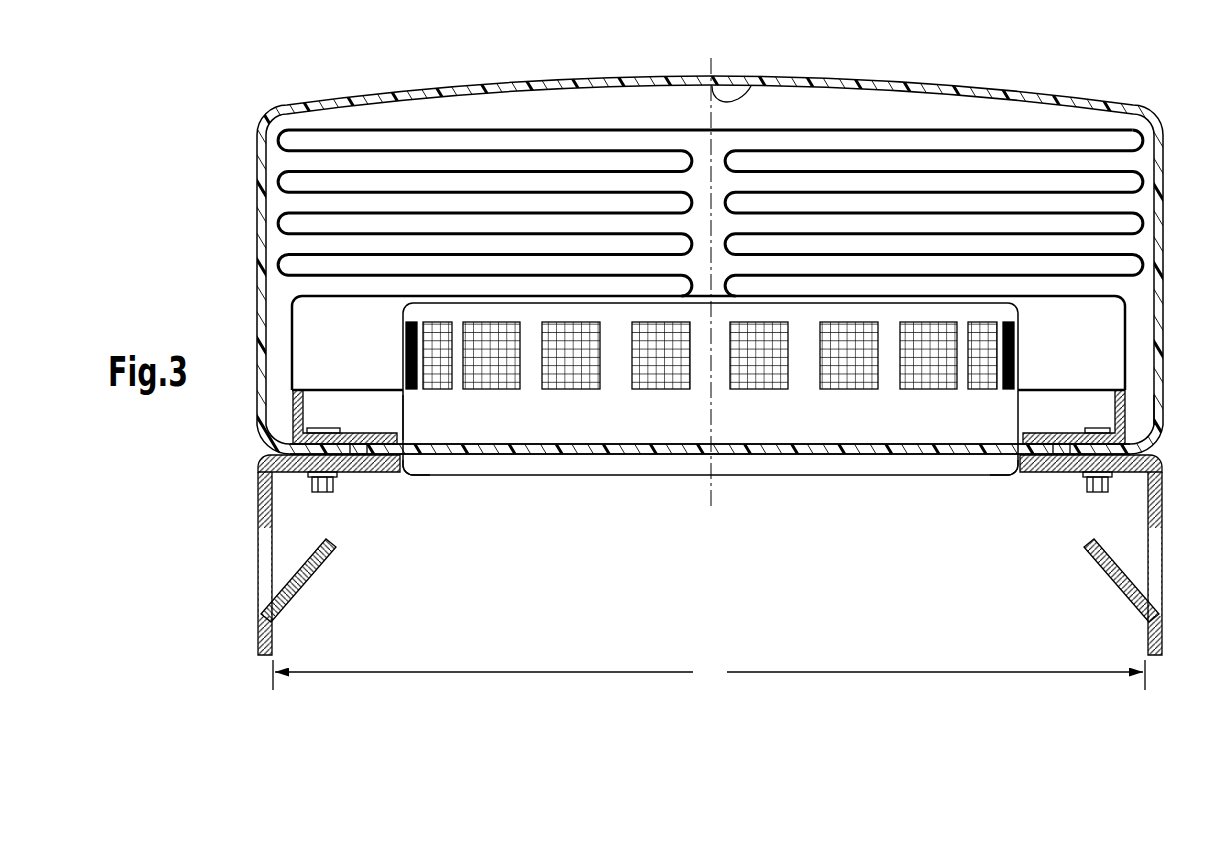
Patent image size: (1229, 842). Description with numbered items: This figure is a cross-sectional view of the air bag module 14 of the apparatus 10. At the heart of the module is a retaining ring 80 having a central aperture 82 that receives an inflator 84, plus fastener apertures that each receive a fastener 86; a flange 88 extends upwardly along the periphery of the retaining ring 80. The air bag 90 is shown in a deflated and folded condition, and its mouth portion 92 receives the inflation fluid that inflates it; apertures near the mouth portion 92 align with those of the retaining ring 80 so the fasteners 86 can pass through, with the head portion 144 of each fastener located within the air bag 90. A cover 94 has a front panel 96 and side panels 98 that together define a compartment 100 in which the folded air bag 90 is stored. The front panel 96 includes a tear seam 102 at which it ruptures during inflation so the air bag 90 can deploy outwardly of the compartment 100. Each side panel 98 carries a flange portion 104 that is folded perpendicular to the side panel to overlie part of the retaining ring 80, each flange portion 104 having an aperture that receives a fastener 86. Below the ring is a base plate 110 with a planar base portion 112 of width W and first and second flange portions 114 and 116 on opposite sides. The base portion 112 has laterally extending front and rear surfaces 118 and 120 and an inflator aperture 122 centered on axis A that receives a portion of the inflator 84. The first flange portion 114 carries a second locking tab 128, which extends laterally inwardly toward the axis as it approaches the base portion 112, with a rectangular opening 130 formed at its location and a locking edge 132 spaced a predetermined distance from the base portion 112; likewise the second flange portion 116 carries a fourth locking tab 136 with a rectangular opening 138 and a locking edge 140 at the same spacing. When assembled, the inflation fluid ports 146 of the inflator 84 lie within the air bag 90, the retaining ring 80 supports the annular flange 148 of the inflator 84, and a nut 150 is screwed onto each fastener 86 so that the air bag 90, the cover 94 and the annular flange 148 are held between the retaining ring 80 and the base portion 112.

The apparatus 10 is at (281, 84).
The air bag module 14 is at (244, 276).
The retaining ring 80 is at (354, 431).
The central aperture 82 is at (393, 440).
The inflator 84 is at (776, 415).
The fastener 86 is at (1100, 425).
The flange 88 is at (1124, 420).
The air bag 90 is at (823, 128).
The mouth portion 92 is at (1068, 448).
The cover 94 is at (501, 82).
The front panel 96 is at (600, 78).
The side panels 98 is at (256, 200).
The compartment 100 is at (657, 120).
The tear seam 102 is at (726, 100).
The flange portion 104 is at (266, 475).
The base plate 110 is at (374, 476).
The base portion 112 is at (1066, 475).
The first flange portion 114 is at (254, 641).
The second flange portion 116 is at (1165, 634).
The front surface 118 is at (1035, 438).
The rear surface 120 is at (1020, 482).
The inflator aperture 122 is at (405, 462).
The second locking tab 128 is at (320, 565).
The rectangular opening 130 is at (265, 567).
The locking edge 132 is at (338, 538).
The fourth locking tab 136 is at (1113, 580).
The rectangular opening 138 is at (1153, 568).
The locking edge 140 is at (1087, 538).
The head portion 144 is at (1083, 430).
The inflation fluid ports 146 is at (575, 390).
The annular flange 148 is at (373, 450).
The nut 150 is at (1108, 480).